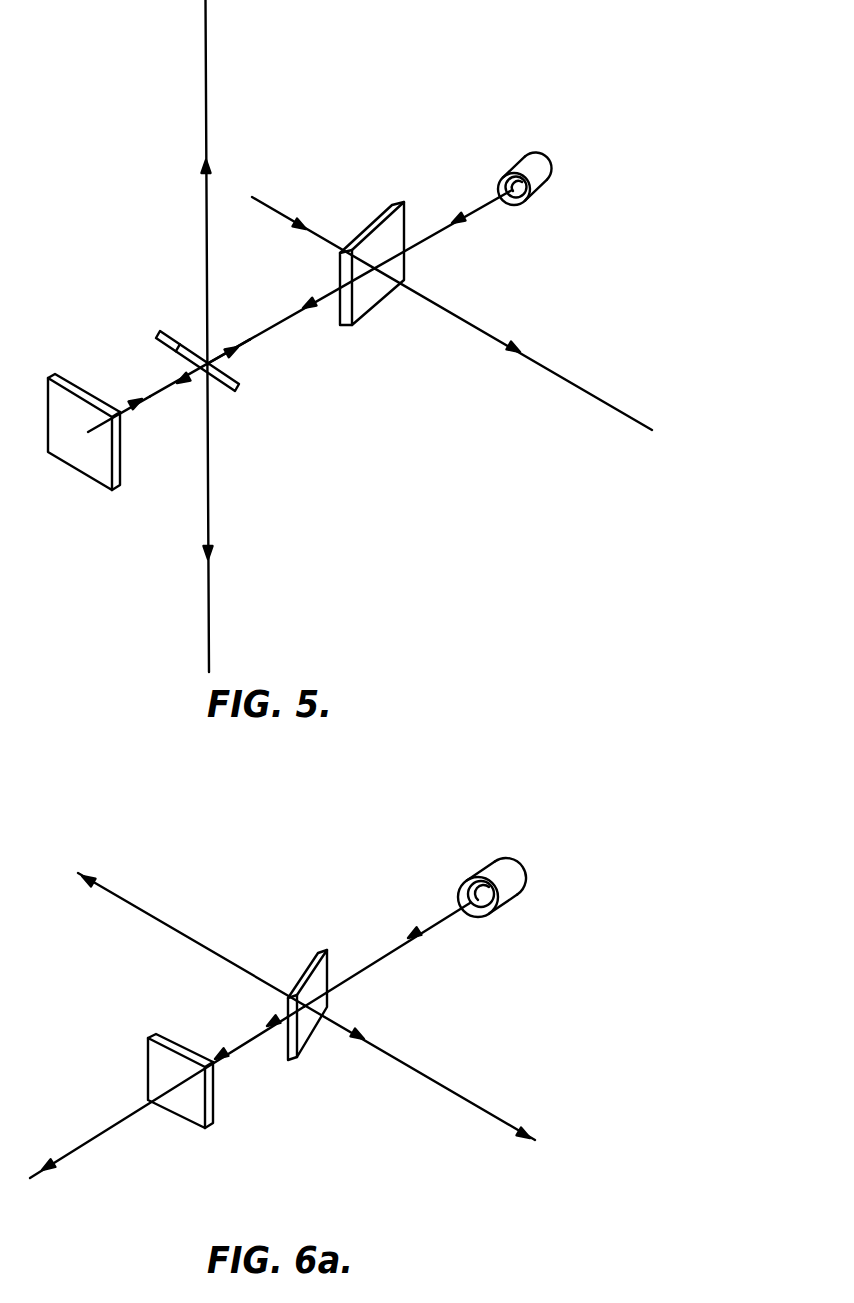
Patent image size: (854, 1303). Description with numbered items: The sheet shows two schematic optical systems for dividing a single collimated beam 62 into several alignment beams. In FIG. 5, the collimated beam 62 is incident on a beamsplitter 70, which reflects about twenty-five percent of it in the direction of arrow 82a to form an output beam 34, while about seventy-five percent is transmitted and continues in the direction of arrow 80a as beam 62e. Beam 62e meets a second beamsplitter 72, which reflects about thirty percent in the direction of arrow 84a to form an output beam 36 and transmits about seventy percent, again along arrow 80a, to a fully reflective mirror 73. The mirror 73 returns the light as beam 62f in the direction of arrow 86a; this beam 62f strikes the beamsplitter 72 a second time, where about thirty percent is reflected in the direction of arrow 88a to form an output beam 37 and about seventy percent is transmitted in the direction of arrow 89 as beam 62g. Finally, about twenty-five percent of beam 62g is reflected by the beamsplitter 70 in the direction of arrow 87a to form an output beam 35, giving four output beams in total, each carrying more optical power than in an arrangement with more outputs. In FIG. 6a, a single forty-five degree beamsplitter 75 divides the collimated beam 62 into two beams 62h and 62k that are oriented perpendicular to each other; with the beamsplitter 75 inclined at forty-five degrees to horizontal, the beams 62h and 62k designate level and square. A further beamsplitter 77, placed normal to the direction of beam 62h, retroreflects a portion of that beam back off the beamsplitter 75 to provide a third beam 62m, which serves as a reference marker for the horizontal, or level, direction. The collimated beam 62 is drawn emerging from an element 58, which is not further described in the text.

In FIG. 5, the output beam 34 is at (590, 390).
In FIG. 5, the output beam 35 is at (276, 203).
In FIG. 5, the output beam 36 is at (205, 70).
In FIG. 5, the output beam 37 is at (213, 655).
In FIG. 6a, the laser source 58 is at (513, 883).
In FIG. 5, the collimated beam 62 is at (482, 212).
In FIG. 6a, the collimated beam 62 is at (438, 923).
In FIG. 5, the beam 62e is at (327, 300).
In FIG. 5, the beam 62f is at (125, 408).
In FIG. 5, the beam 62g is at (223, 357).
In FIG. 6a, the beam 62h is at (278, 1017).
In FIG. 6a, the beam 62k is at (347, 1023).
In FIG. 6a, the third beam 62m is at (173, 923).
In FIG. 5, the beamsplitter 70 is at (370, 320).
In FIG. 5, the beamsplitter 72 is at (233, 397).
In FIG. 5, the fully reflective mirror 73 is at (102, 490).
In FIG. 6a, the forty-five degree beamsplitter 75 is at (313, 950).
In FIG. 6a, the beamsplitter 77 is at (177, 1120).
In FIG. 5, the arrow 80a is at (305, 303).
In FIG. 5, the arrow 82a is at (530, 350).
In FIG. 5, the arrow 84a is at (207, 157).
In FIG. 5, the arrow 86a is at (140, 397).
In FIG. 5, the arrow 87a is at (307, 221).
In FIG. 5, the arrow 88a is at (212, 543).
In FIG. 5, the arrow 89 is at (237, 347).